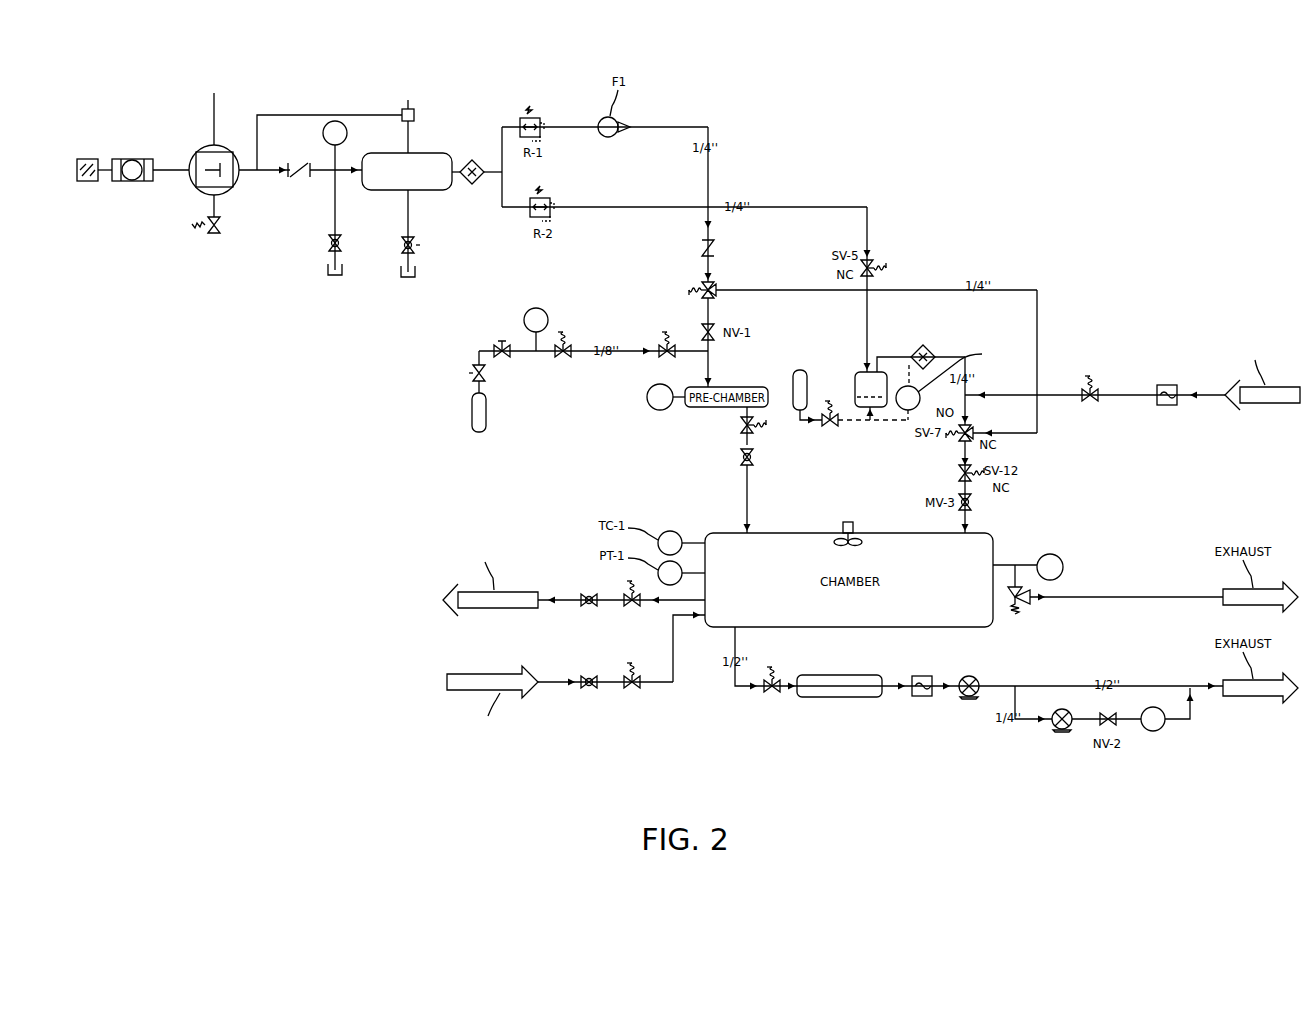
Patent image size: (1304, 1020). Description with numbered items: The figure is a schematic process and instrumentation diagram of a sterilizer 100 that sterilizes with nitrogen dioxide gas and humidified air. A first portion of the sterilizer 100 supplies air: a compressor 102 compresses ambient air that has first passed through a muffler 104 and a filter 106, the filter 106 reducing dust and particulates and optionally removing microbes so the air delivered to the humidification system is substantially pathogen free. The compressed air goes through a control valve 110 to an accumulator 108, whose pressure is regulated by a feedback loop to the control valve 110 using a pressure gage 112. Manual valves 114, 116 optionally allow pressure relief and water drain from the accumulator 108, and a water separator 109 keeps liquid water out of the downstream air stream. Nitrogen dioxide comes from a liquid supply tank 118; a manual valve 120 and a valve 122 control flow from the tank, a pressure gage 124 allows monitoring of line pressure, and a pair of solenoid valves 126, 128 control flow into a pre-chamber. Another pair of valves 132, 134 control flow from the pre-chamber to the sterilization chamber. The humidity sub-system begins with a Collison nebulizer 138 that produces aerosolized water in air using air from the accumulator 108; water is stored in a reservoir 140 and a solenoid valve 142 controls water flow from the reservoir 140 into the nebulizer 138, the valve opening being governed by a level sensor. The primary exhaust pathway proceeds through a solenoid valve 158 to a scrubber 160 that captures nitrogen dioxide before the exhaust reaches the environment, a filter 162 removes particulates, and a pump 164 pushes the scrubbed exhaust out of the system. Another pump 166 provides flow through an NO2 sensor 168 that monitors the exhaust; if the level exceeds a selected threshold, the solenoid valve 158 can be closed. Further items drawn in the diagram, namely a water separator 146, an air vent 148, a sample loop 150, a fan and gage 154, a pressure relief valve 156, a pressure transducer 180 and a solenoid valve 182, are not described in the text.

The sterilizer 100 is at (1027, 192).
The compressor 102 is at (204, 148).
The muffler 104 is at (88, 183).
The filter 106 is at (140, 183).
The accumulator 108 is at (426, 151).
The water separator 109 is at (473, 158).
The control valve 110 is at (294, 180).
The pressure gage 112 is at (331, 122).
The manual valve 114 is at (332, 280).
The manual valve 116 is at (405, 282).
The liquid supply tank 118 is at (470, 419).
The manual valve 120 is at (470, 373).
The valve 122 is at (500, 338).
The pressure gage 124 is at (533, 308).
The solenoid valve 126 is at (564, 330).
The solenoid valve 128 is at (664, 330).
The valve 132 is at (738, 425).
The valve 134 is at (757, 462).
The Collison nebulizer 138 is at (858, 370).
The reservoir 140 is at (797, 368).
The solenoid valve 142 is at (831, 430).
The water separator WS-1 146 is at (929, 350).
The air vent line 148 is at (1207, 393).
The sample loop 150 is at (594, 705).
The fan F-1 / pressure gauge PG-1 154 is at (1066, 527).
The pressure relief valve PRV-1 156 is at (1020, 610).
The solenoid valve 158 is at (768, 696).
The scrubber 160 is at (833, 699).
The filter 162 is at (916, 698).
The pump 164 is at (972, 700).
The pump 166 is at (1058, 733).
The NO2 sensor 168 is at (1156, 732).
The pressure transducer PT-2 180 is at (648, 402).
The solenoid valve SV-3 182 is at (700, 278).